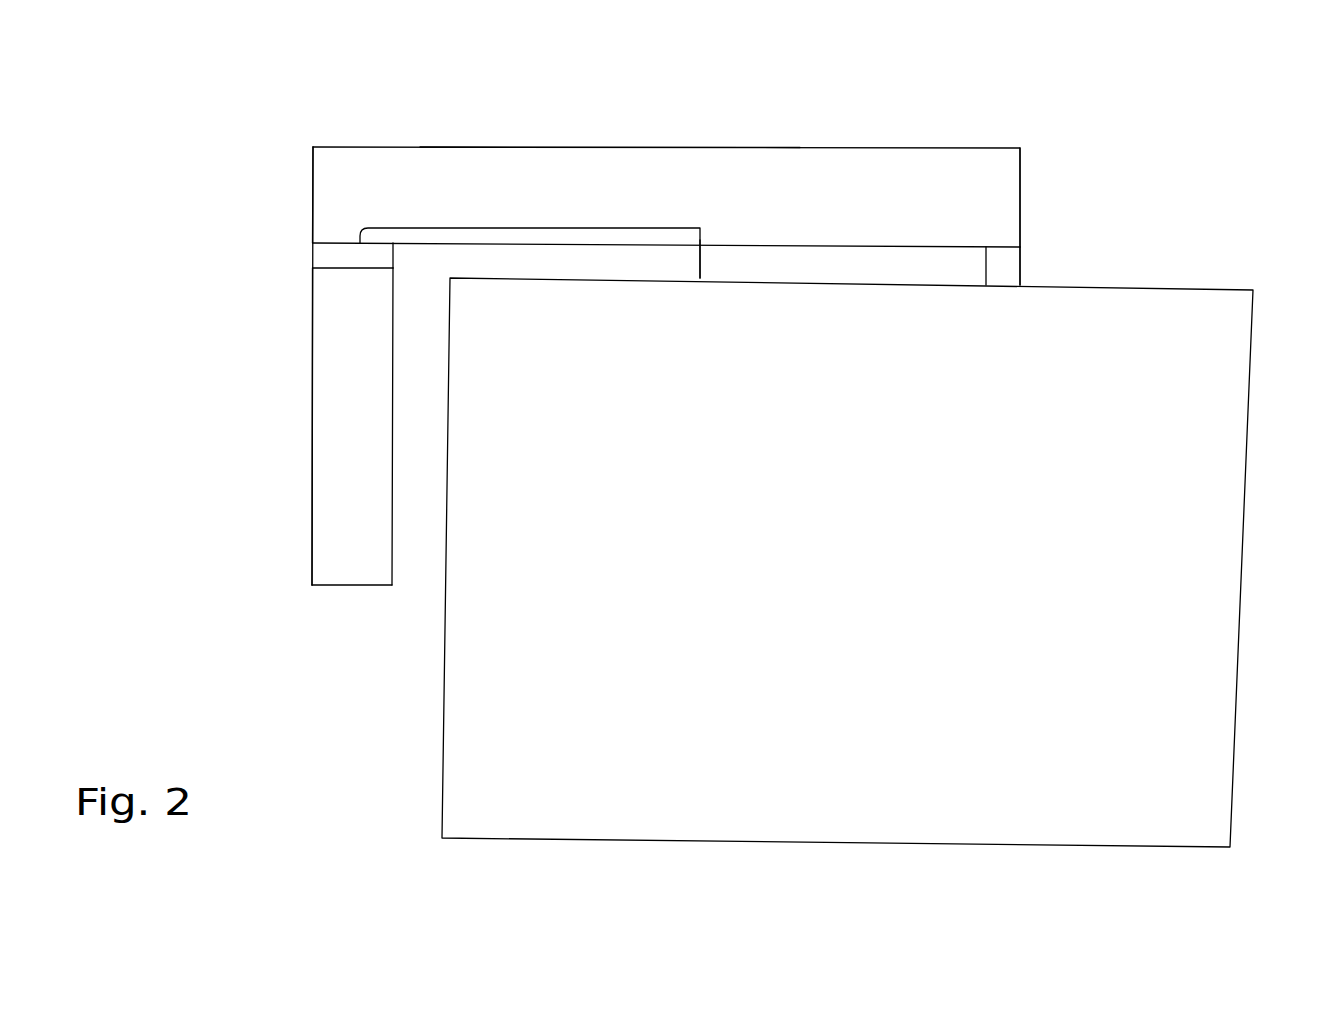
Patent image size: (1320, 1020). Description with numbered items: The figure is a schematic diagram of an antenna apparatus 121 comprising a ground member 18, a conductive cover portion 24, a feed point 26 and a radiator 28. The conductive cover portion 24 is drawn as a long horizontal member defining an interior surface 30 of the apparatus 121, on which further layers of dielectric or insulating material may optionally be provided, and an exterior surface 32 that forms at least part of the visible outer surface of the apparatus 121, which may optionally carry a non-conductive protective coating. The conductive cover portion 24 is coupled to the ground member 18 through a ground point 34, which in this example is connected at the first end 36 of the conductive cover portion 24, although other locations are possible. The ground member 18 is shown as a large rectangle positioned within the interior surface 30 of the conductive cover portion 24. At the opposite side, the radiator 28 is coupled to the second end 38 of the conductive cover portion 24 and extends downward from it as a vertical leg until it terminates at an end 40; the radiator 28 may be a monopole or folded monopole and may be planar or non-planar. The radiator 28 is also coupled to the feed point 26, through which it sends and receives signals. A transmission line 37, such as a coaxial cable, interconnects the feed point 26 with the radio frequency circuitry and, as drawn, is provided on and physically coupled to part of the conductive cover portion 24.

The apparatus 121 is at (1182, 128).
The ground member 18 is at (842, 508).
The conductive cover portion 24 is at (948, 176).
The feed point 26 is at (328, 258).
The radiator 28 is at (325, 418).
The interior surface 30 is at (445, 243).
The exterior surface 32 is at (605, 147).
The ground point 34 is at (1005, 268).
The first end 36 is at (1010, 190).
The transmission line 37 is at (701, 262).
The second end 38 is at (322, 226).
The end 40 is at (342, 576).